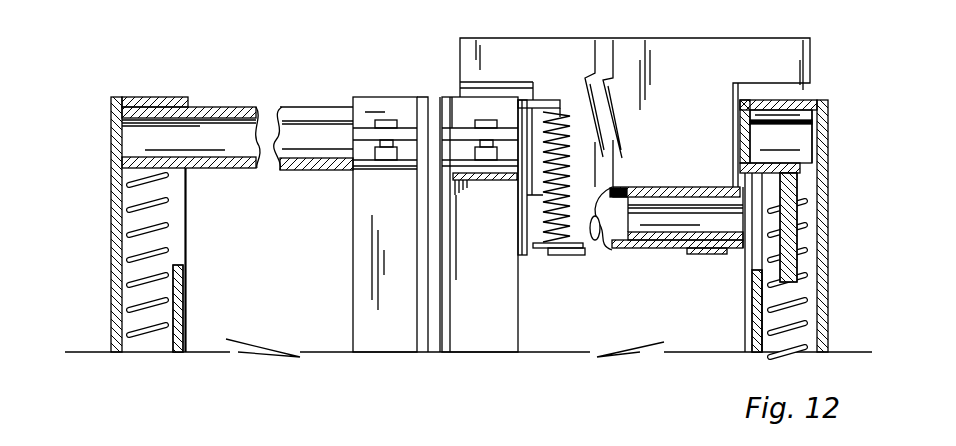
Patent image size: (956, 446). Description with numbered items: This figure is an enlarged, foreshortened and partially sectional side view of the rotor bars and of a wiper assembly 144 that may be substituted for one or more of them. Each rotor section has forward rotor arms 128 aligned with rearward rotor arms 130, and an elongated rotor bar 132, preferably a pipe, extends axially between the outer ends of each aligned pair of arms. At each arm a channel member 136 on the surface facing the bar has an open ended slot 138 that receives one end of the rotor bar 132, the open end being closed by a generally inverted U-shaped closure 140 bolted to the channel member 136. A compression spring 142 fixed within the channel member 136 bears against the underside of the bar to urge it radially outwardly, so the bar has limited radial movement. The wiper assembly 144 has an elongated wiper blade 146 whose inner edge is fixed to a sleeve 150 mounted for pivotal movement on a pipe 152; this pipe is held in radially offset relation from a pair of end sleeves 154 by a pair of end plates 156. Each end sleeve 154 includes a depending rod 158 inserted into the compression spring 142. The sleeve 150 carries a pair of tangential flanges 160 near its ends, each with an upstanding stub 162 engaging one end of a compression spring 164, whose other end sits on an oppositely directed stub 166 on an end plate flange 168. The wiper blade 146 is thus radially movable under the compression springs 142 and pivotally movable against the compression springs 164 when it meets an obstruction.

The forward rotor arms 128 is at (343, 327).
The rearward rotor arms 130 is at (195, 315).
The rotor bar 132 is at (303, 110).
The channel member 136 is at (360, 292).
The open ended slot 138 is at (176, 273).
The inverted U-shaped closure 140 is at (192, 103).
The compression spring 142 is at (160, 256).
The wiper assembly 144 is at (742, 18).
The wiper blade 146 is at (533, 50).
The sleeve 150 is at (720, 187).
The pipe 152 is at (677, 253).
The end sleeves 154 is at (817, 140).
The end plates 156 is at (520, 258).
The depending rod 158 is at (792, 214).
The tangential flanges 160 is at (577, 247).
The upstanding stub 162 is at (552, 255).
The compression spring 164 is at (542, 230).
The oppositely directed stub 166 is at (540, 105).
The end plate flange 168 is at (568, 0).